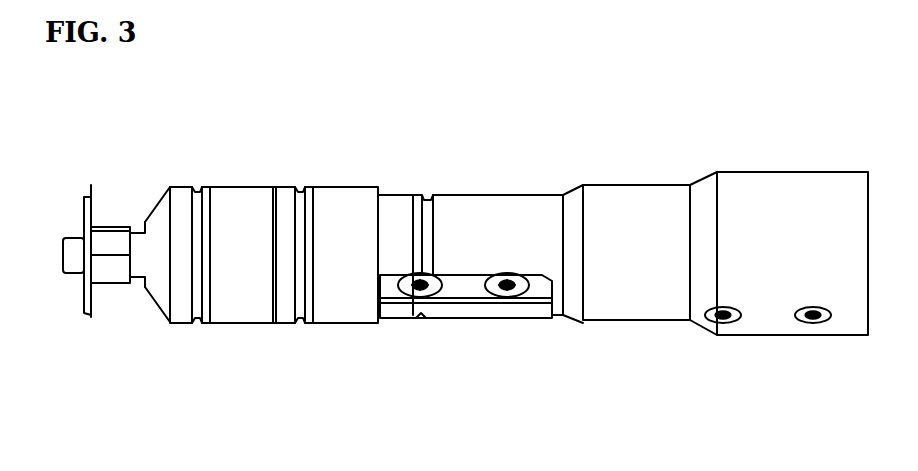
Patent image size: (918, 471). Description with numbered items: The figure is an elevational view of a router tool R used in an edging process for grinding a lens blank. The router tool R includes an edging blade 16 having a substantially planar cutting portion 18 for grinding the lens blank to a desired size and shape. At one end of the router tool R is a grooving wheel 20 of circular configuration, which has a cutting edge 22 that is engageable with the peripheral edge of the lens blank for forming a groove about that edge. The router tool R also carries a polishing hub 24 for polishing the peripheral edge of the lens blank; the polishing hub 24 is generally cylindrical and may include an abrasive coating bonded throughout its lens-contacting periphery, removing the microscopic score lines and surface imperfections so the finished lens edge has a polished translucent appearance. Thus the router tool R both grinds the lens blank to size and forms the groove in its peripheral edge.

The router tool R is at (633, 127).
The edging blade 16 is at (480, 353).
The cutting portion 18 is at (510, 320).
The grooving wheel 20 is at (77, 218).
The cutting edge 22 is at (90, 322).
The polishing hub 24 is at (253, 325).